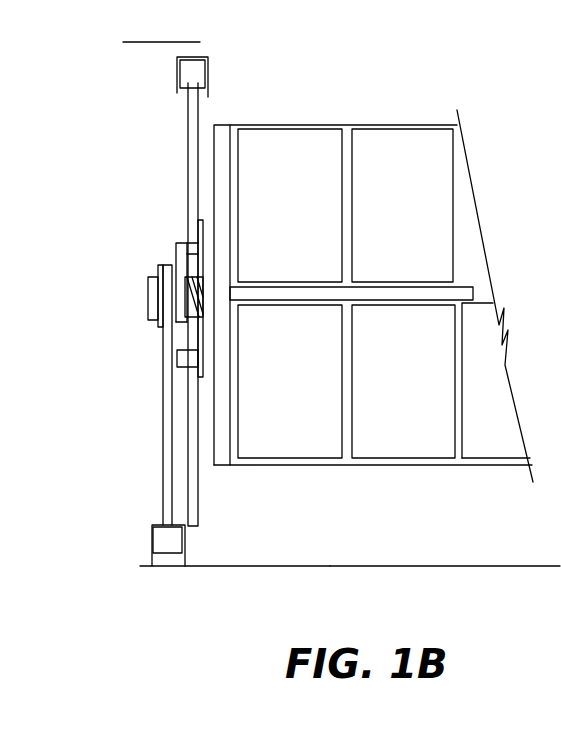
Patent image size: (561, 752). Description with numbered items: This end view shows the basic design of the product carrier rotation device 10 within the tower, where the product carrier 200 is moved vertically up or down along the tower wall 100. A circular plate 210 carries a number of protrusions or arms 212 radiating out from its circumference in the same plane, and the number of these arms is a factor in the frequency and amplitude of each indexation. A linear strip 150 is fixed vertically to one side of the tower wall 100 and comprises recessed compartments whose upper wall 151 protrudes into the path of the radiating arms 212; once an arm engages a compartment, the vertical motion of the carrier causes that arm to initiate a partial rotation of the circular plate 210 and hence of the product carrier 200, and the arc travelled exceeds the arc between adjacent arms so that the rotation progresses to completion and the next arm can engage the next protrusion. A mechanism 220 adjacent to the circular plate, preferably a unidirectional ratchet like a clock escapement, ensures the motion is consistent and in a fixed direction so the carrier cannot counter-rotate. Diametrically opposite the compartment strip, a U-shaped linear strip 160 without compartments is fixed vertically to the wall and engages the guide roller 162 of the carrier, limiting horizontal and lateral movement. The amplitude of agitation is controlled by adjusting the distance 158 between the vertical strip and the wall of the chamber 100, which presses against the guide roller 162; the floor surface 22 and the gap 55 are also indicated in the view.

The door operator apparatus 10 is at (119, 347).
The floor surface 22 is at (117, 587).
The gap 55 is at (149, 490).
The tower wall 100 is at (443, 542).
The linear strip 150 is at (178, 61).
The upper wall 151 is at (180, 74).
The distance 158 is at (204, 47).
The 'U' shaped linear strip 160 is at (153, 546).
The guide roller 162 is at (161, 534).
The product carrier 200 is at (303, 118).
The circular plate 210 is at (199, 223).
The protrusions (arms) 212 is at (188, 165).
The mechanism 220 is at (176, 262).